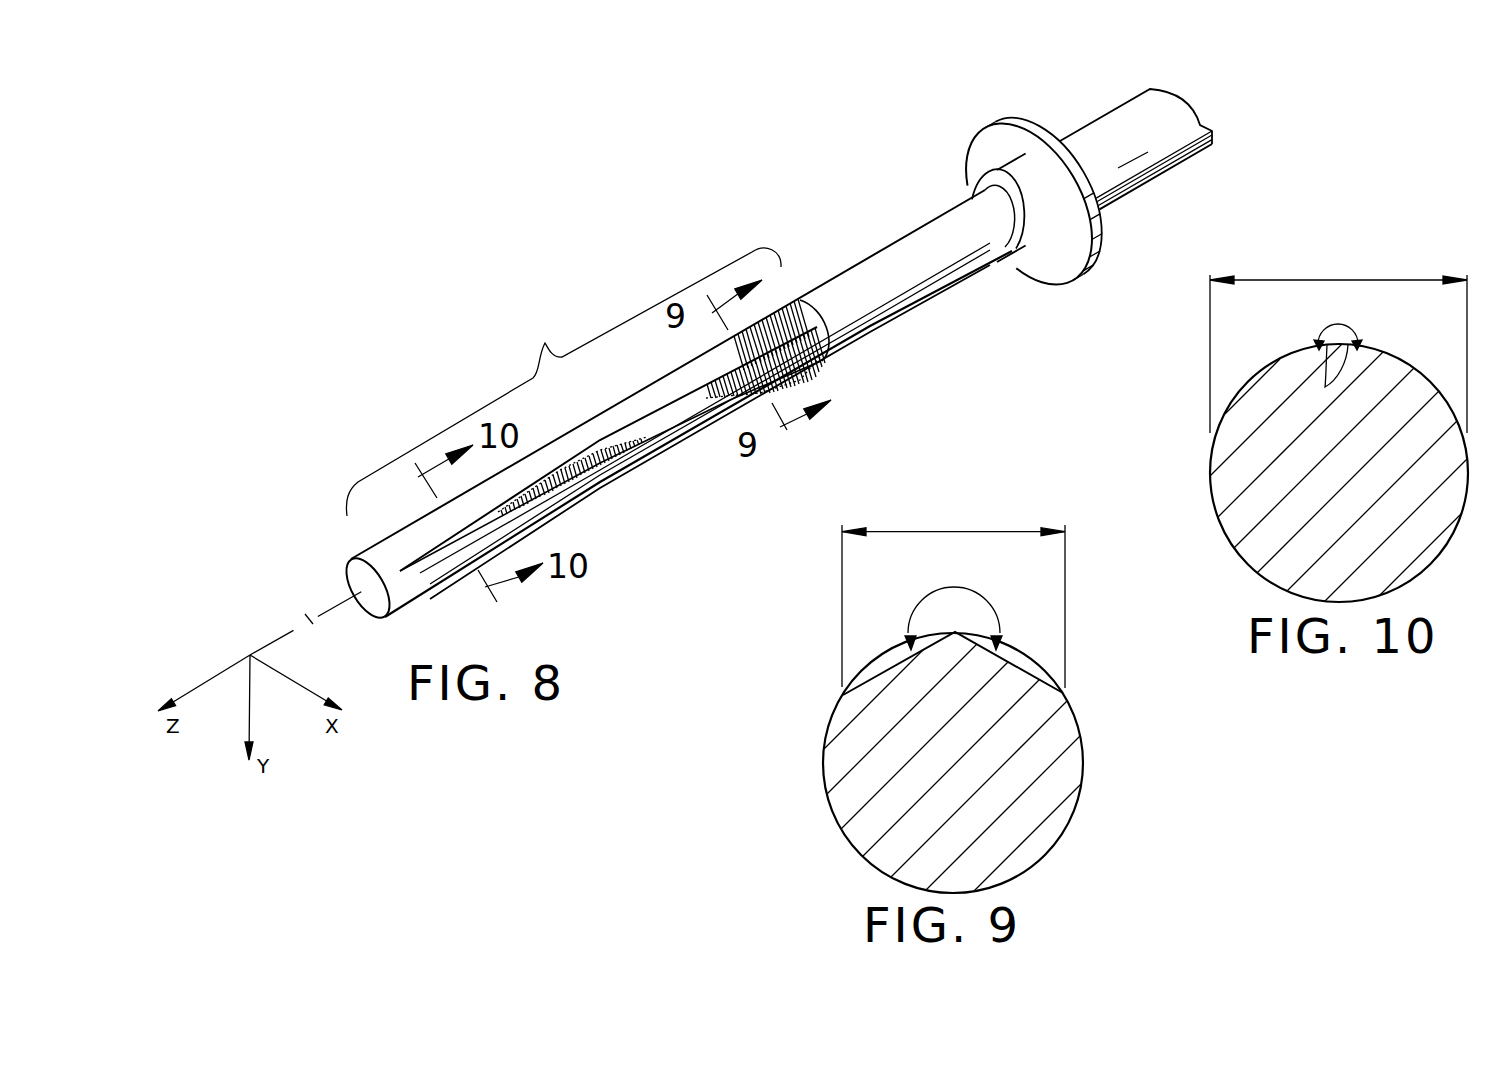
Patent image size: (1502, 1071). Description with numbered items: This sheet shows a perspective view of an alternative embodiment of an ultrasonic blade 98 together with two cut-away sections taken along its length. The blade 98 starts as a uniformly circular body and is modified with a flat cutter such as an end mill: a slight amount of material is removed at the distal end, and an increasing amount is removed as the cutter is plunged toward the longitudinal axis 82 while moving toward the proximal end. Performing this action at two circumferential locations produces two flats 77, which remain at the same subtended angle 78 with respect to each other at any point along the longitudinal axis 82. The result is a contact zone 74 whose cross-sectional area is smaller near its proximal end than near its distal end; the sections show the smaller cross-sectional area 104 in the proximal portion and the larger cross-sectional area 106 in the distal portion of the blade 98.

In FIG. 8, the contact zone 74 is at (563, 382).
In FIG. 8, the flats 77 is at (658, 410).
In FIG. 9, the flats 77 is at (887, 665).
In FIG. 10, the flats 77 is at (1324, 387).
In FIG. 9, the subtended angle 78 is at (970, 587).
In FIG. 10, the subtended angle 78 is at (1343, 322).
In FIG. 8, the longitudinal axis 82 is at (310, 619).
In FIG. 8, the blade 98 is at (377, 558).
In FIG. 9, the blade 98 is at (1022, 817).
In FIG. 10, the blade 98 is at (1393, 550).
In FIG. 9, the cross-sectional area 104 is at (873, 827).
In FIG. 10, the cross-sectional area 106 is at (1273, 527).